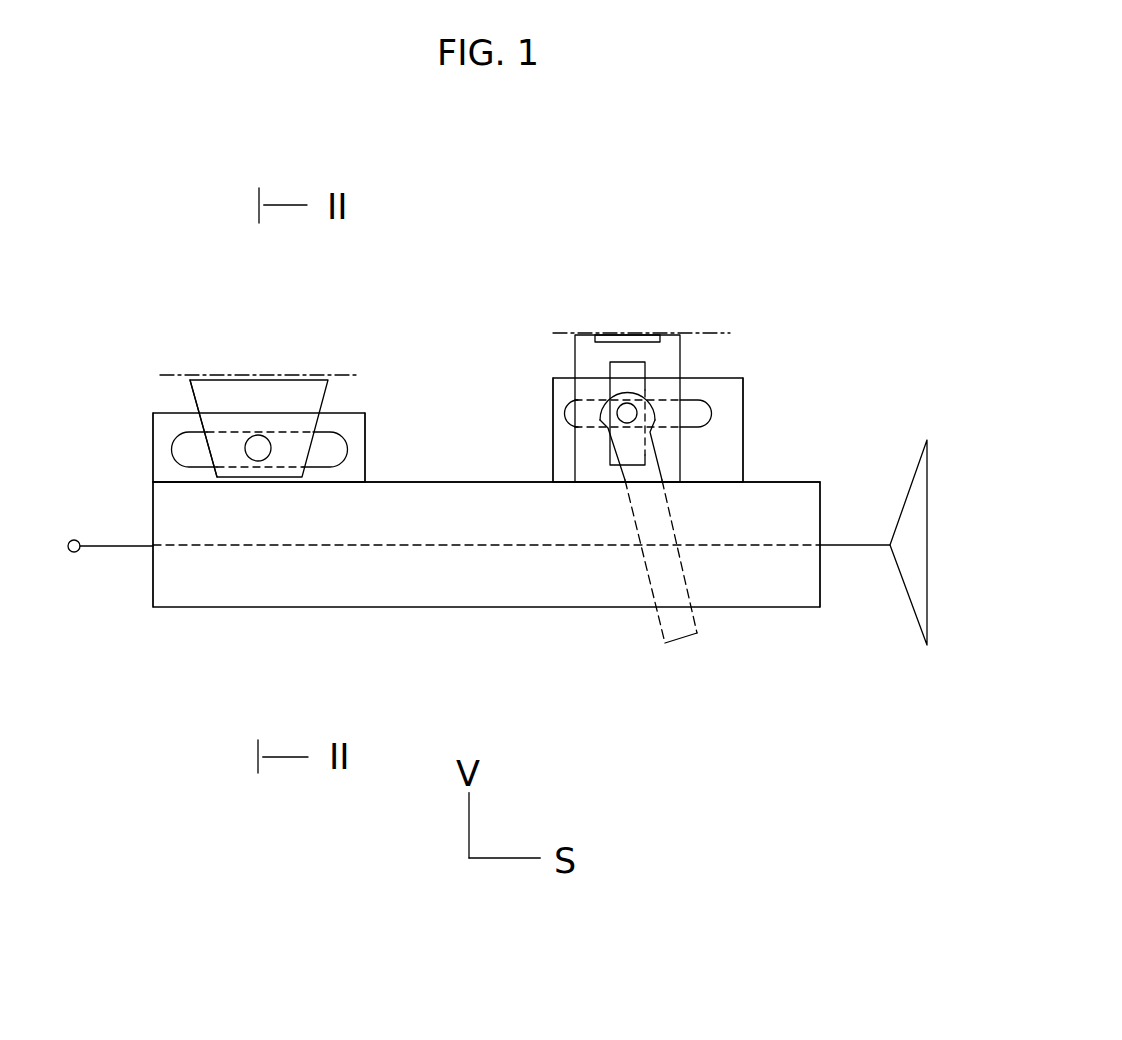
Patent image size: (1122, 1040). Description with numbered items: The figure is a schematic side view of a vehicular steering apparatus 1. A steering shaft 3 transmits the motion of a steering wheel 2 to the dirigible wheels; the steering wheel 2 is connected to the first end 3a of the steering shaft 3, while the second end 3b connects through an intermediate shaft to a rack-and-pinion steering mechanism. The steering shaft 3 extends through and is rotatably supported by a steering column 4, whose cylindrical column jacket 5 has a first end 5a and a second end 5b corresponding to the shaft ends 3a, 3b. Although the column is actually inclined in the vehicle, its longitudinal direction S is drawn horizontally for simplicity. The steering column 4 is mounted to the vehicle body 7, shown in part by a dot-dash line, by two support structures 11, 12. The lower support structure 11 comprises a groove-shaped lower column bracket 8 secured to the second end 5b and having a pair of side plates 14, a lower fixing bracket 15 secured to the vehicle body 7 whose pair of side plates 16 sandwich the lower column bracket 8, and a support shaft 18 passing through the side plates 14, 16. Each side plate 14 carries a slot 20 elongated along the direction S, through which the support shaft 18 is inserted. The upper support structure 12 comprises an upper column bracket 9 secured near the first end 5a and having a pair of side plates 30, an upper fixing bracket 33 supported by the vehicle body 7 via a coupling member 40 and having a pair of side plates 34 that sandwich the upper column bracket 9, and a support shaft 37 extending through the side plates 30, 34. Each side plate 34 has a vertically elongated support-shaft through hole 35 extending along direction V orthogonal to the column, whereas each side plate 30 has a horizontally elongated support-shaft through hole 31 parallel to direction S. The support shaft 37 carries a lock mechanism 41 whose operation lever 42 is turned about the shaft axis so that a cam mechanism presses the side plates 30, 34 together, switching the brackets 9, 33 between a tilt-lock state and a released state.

The steering apparatus 1 is at (848, 348).
The steering wheel 2 is at (908, 600).
The steering shaft 3 is at (309, 549).
The first end 3a is at (857, 547).
The second end 3b is at (117, 546).
The steering column 4 is at (540, 626).
The column jacket 5 is at (416, 611).
The first end 5a is at (790, 607).
The second end 5b is at (212, 607).
The vehicle body 7 is at (347, 377).
The lower column bracket 8 is at (153, 469).
The upper column bracket 9 is at (744, 467).
The support structure 11 is at (127, 411).
The support structure 12 is at (762, 369).
The side plates 14 is at (353, 472).
The lower fixing bracket 15 is at (203, 401).
The side plates 16 is at (278, 392).
The support shaft 18 is at (258, 448).
The slot 20 is at (345, 442).
The side plates 30 is at (558, 390).
The support-shaft through hole 31 is at (573, 420).
The upper fixing bracket 33 is at (674, 352).
The side plates 34 is at (667, 368).
The support-shaft through hole 35 is at (643, 387).
The support shaft 37 is at (622, 415).
The coupling member 40 is at (594, 345).
The lock mechanism 41 is at (661, 452).
The operation lever 42 is at (680, 635).